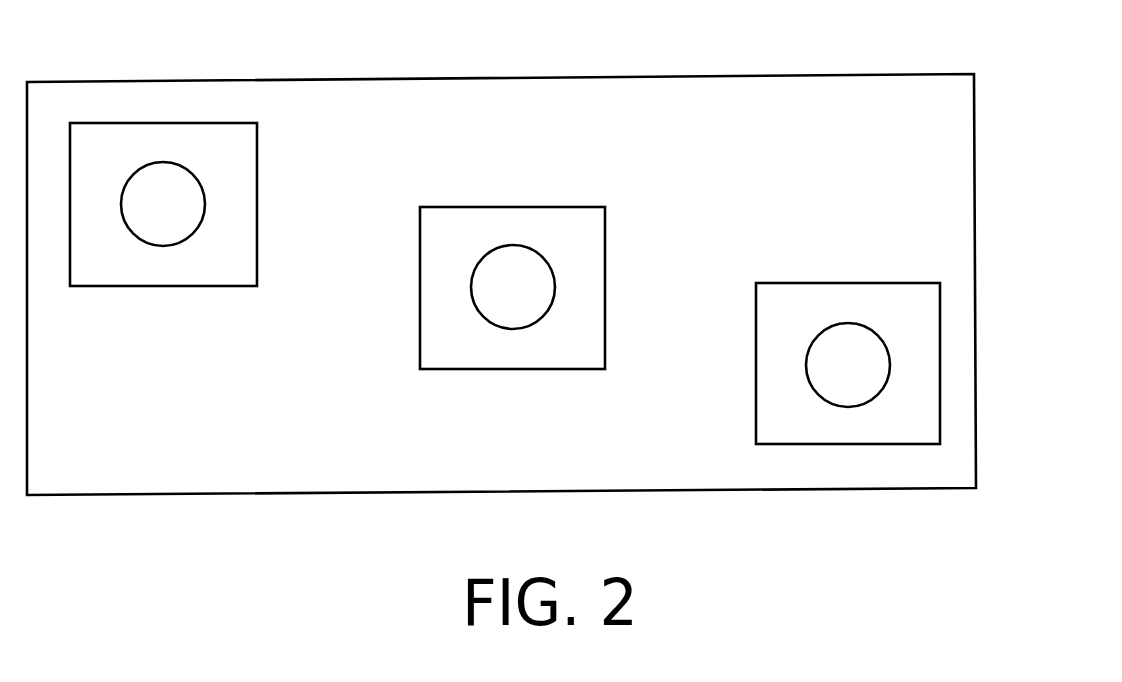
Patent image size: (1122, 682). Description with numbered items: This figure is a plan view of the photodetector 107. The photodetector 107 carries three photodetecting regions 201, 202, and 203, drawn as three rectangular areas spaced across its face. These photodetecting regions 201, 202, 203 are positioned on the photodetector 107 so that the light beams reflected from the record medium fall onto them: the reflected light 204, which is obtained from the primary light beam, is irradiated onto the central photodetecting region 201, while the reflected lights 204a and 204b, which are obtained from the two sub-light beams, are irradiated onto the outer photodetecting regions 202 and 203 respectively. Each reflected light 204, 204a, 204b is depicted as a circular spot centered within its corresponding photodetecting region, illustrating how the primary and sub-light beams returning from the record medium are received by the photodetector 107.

The photodetector 107 is at (974, 222).
The photodetecting region 201 is at (480, 207).
The photodetecting region 202 is at (160, 123).
The photodetecting region 203 is at (782, 283).
The reflected light 204 is at (506, 330).
The reflected light 204a is at (163, 246).
The reflected light 204b is at (847, 407).